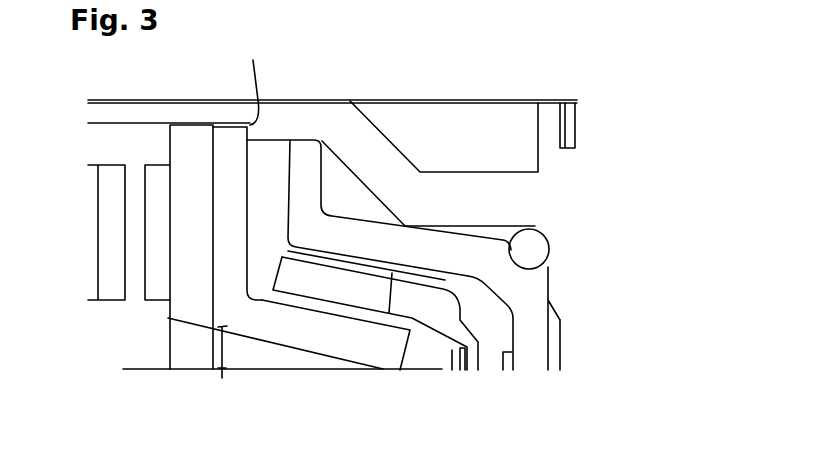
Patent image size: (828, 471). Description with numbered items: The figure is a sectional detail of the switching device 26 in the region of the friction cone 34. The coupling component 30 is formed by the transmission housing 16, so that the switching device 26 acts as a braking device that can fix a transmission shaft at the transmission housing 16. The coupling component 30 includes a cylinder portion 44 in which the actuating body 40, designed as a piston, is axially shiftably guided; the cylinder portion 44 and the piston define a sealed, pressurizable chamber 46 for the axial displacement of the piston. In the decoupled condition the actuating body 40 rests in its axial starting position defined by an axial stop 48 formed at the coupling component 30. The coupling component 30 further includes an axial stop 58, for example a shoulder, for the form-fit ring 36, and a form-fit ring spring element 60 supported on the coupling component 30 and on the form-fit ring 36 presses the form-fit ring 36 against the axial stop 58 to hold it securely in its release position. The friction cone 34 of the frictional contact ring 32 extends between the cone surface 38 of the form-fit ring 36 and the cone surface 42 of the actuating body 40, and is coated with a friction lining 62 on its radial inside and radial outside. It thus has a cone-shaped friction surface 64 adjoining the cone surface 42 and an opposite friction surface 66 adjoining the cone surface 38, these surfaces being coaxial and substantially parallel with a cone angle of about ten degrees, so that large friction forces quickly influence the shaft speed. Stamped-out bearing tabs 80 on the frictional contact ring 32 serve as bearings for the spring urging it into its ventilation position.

The switching device 26 is at (633, 80).
The coupling component 30 is at (385, 175).
The transmission housing 16 is at (513, 198).
The cylinder portion 44 is at (473, 217).
The axial stop 48 is at (559, 287).
The actuating body 40 is at (533, 320).
The chamber 46 is at (565, 353).
The axial stop 58 is at (253, 60).
The form-fit ring spring element 60 is at (105, 247).
The form-fit ring 36 is at (178, 300).
The cone surface 38 is at (268, 303).
The friction surface 66 is at (345, 318).
The friction surface 64 is at (327, 256).
The cone surface 42 is at (378, 256).
The friction cone 34 is at (272, 263).
The friction lining 62 is at (378, 315).
The frictional contact ring 32 is at (437, 352).
The bearing tabs 80 is at (470, 358).